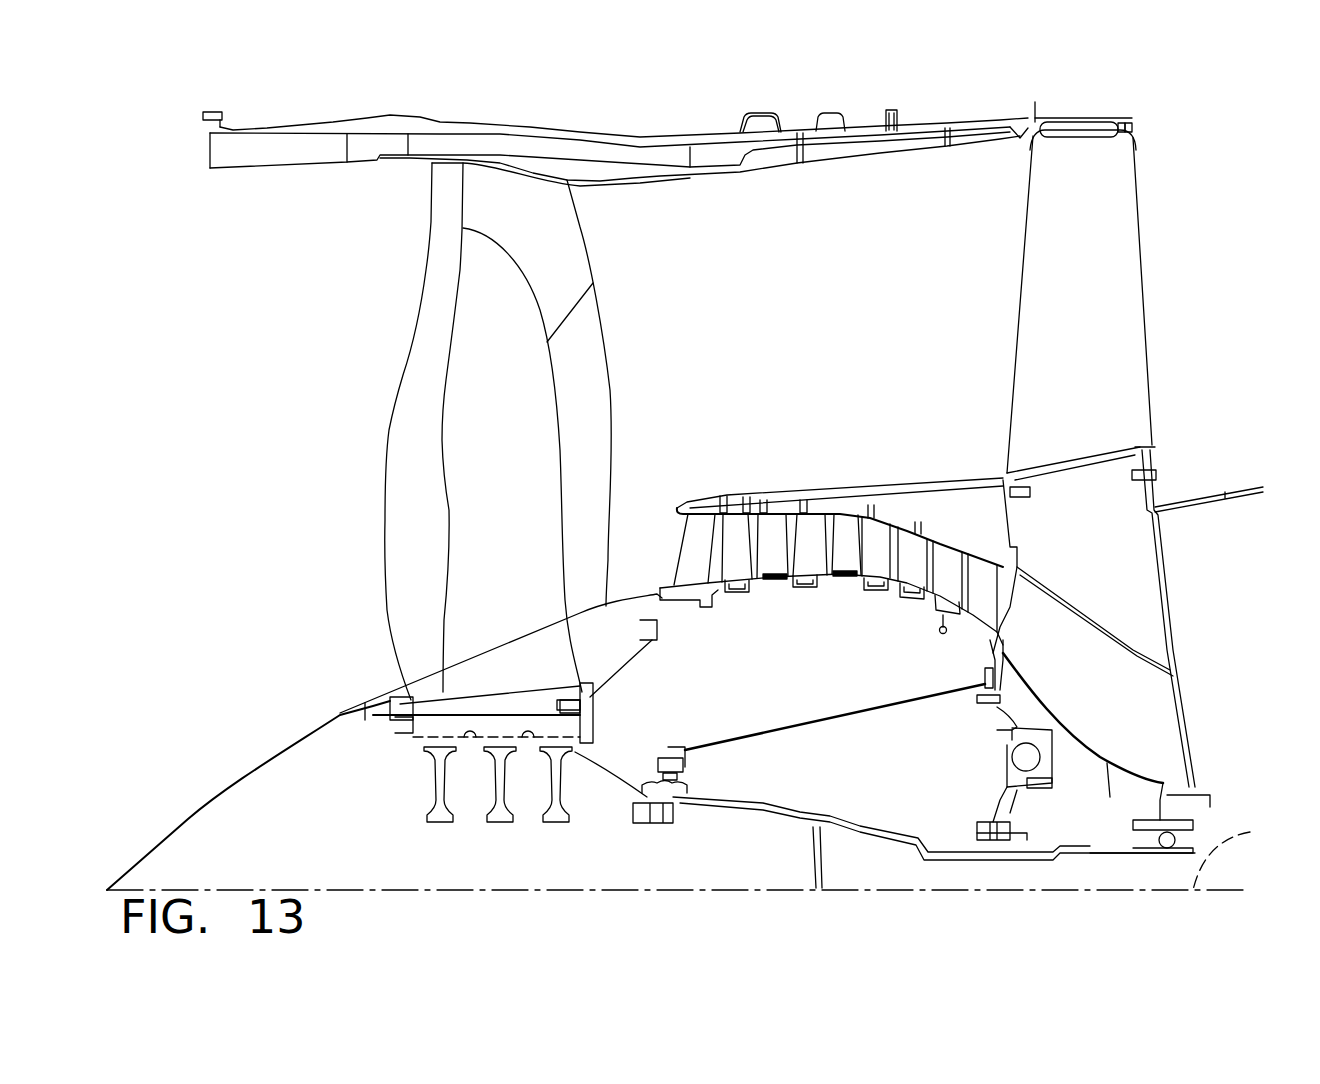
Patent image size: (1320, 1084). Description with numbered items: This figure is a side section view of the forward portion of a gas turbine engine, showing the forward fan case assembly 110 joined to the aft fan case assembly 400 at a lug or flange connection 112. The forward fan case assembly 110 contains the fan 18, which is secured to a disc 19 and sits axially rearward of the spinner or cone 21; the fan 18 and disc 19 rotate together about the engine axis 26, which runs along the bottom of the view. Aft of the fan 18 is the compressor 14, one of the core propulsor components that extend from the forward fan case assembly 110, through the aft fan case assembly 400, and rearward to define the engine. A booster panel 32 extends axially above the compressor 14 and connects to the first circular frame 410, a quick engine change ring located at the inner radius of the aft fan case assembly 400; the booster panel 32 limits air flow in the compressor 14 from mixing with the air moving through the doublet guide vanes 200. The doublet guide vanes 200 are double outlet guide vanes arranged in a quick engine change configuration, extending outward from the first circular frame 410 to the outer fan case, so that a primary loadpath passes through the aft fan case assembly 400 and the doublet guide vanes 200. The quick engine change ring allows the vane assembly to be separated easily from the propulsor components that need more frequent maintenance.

The forward fan case assembly 110 is at (570, 128).
The lug or flange connection 112 is at (900, 105).
The aft fan case assembly 400 is at (1172, 143).
The doublet guide vanes 200 is at (1159, 335).
The first circular frame 410 is at (1168, 452).
The fan 18 is at (388, 370).
The spinner or cone 21 is at (220, 790).
The disc 19 is at (397, 793).
The booster panel 32 is at (868, 475).
The compressor 14 is at (810, 622).
The engine axis 26 is at (1250, 832).